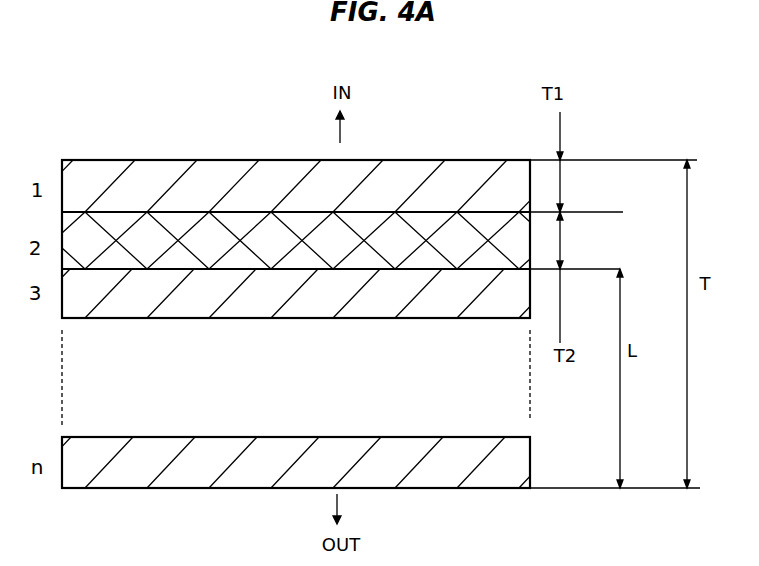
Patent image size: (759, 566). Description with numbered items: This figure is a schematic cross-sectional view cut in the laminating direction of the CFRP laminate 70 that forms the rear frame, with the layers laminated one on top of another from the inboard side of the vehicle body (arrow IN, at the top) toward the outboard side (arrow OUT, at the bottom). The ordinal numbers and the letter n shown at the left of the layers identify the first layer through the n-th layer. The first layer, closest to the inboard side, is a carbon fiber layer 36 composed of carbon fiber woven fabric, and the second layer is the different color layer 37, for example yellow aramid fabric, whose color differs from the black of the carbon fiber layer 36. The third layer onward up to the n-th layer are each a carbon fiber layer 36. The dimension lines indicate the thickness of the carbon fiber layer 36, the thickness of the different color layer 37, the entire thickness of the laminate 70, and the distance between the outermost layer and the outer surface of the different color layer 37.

The laminate 70 is at (115, 158).
The carbon fiber layer 36 is at (158, 173).
The different color layer 37 is at (212, 237).